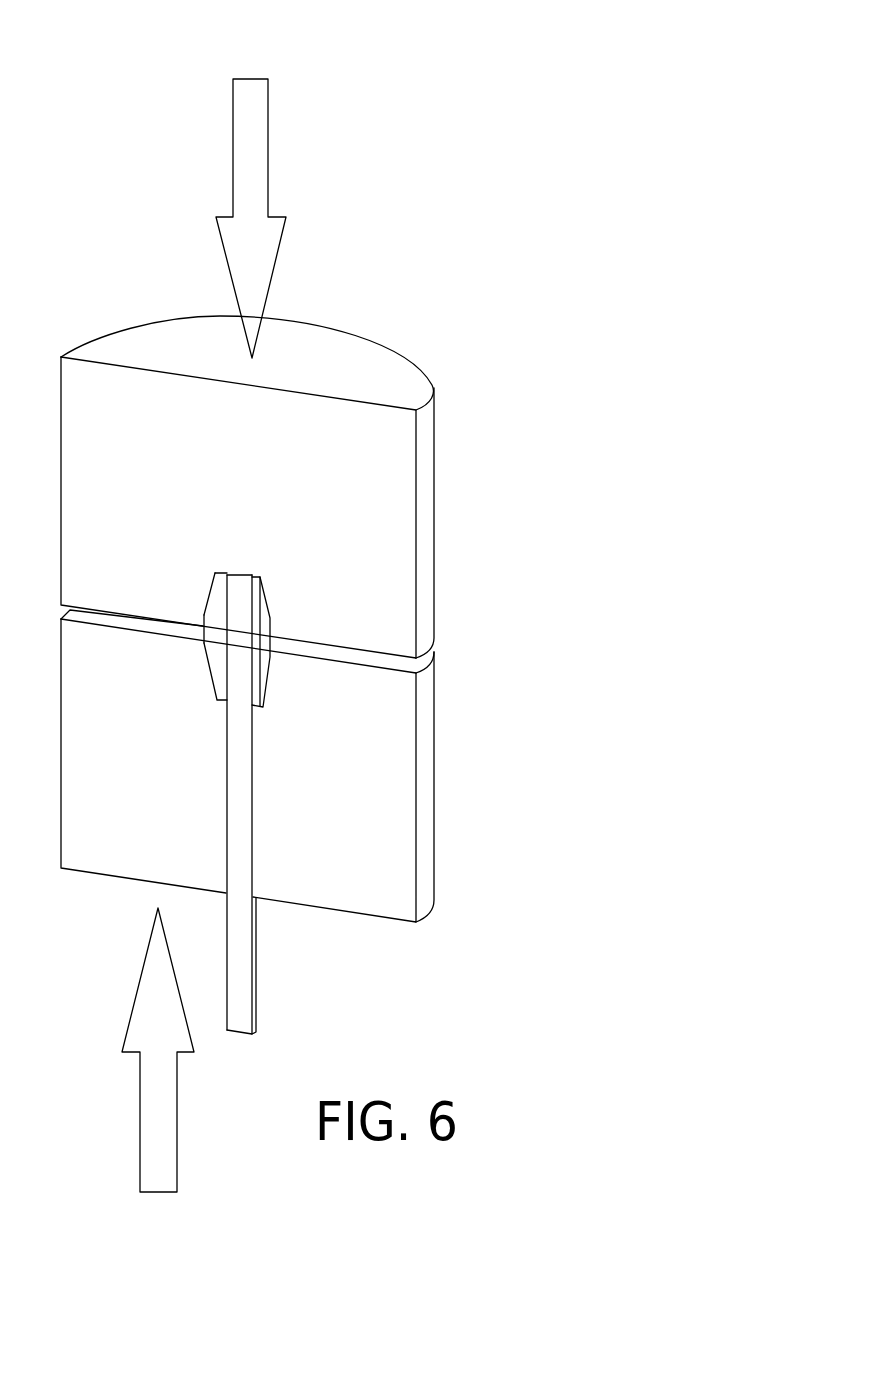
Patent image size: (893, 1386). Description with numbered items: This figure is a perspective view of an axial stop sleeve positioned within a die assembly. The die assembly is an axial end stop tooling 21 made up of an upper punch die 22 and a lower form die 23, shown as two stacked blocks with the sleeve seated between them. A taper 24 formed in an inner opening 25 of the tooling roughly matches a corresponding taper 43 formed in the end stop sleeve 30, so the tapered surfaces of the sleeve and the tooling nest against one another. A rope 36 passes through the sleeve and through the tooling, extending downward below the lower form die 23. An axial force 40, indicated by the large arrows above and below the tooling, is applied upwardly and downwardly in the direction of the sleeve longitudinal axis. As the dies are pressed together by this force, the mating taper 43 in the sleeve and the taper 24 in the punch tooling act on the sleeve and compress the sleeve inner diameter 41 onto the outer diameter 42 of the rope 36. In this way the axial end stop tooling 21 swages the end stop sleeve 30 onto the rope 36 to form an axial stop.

The axial end stop tooling 21 is at (324, 619).
The upper punch die 22 is at (416, 515).
The lower form die 23 is at (416, 797).
The taper 24 is at (212, 585).
The inner opening 25 is at (204, 622).
The end stop sleeve 30 is at (249, 769).
The rope 36 is at (256, 977).
The axial force 40 is at (268, 148).
The sleeve inner diameter 41 is at (225, 678).
The outer diameter of rope 42 is at (253, 738).
The taper 43 is at (234, 630).